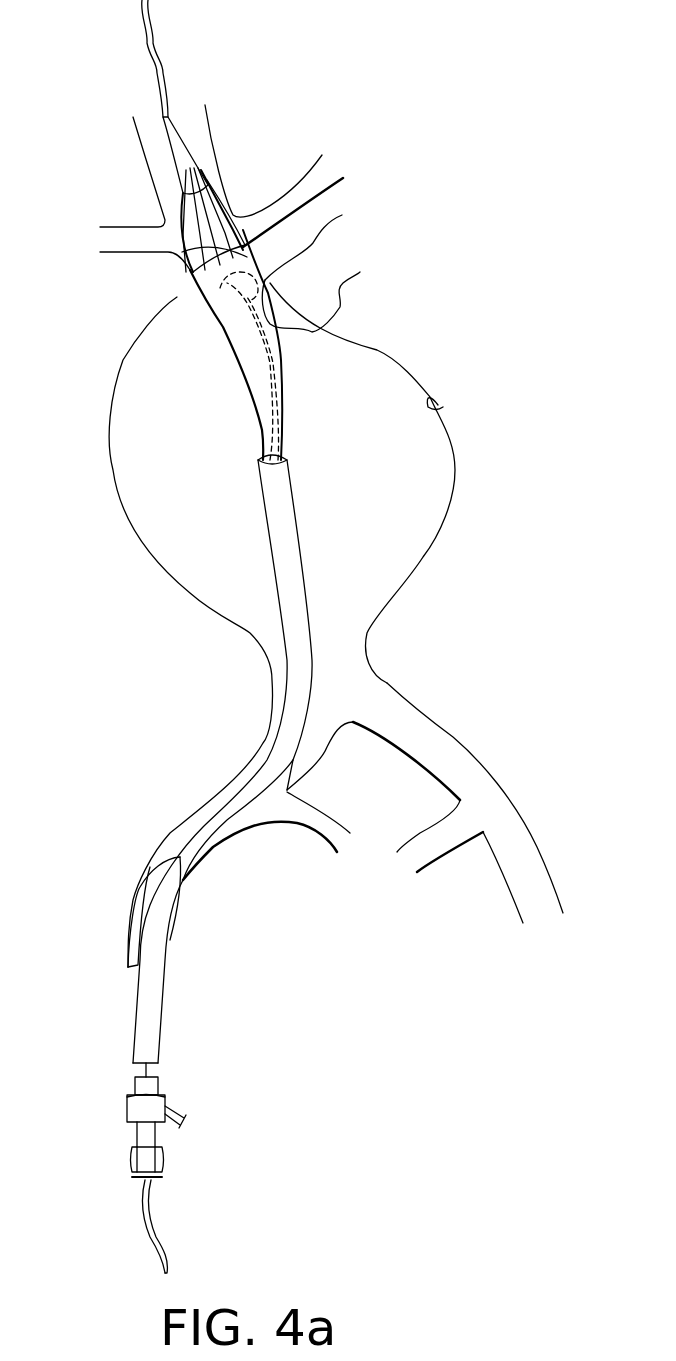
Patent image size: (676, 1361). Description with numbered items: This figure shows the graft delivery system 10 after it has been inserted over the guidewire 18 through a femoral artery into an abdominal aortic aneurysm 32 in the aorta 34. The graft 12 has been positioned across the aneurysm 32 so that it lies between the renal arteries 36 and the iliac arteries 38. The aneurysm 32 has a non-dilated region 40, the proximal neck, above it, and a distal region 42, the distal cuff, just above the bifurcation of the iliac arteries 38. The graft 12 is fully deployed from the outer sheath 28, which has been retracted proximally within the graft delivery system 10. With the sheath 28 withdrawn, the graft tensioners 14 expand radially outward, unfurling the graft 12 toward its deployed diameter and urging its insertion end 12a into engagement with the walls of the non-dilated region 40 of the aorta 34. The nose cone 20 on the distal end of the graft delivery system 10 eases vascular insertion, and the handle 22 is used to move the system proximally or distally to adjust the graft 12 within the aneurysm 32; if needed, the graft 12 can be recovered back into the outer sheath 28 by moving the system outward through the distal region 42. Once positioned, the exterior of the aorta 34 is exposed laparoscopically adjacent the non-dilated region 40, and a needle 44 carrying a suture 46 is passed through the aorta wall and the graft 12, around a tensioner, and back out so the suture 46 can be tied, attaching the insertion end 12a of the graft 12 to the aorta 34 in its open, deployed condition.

The graft delivery system 10 is at (176, 973).
The graft 12 is at (283, 377).
The insertion end 12a is at (345, 178).
The graft tensioners 14 is at (185, 218).
The guidewire 18 is at (147, 45).
The nose cone 20 is at (190, 135).
The handle 22 is at (157, 1177).
The outer sheath 28 is at (292, 547).
The aneurysm 32 is at (443, 407).
The aorta 34 is at (318, 239).
The renal arteries 36 is at (100, 253).
The iliac arteries 38 is at (407, 757).
The non-dilated region 40 is at (197, 283).
The distal region 42 is at (390, 680).
The needle 44 is at (243, 297).
The suture 46 is at (347, 288).